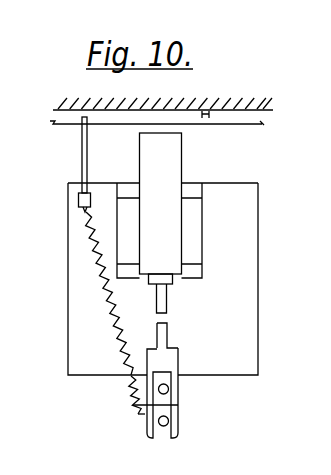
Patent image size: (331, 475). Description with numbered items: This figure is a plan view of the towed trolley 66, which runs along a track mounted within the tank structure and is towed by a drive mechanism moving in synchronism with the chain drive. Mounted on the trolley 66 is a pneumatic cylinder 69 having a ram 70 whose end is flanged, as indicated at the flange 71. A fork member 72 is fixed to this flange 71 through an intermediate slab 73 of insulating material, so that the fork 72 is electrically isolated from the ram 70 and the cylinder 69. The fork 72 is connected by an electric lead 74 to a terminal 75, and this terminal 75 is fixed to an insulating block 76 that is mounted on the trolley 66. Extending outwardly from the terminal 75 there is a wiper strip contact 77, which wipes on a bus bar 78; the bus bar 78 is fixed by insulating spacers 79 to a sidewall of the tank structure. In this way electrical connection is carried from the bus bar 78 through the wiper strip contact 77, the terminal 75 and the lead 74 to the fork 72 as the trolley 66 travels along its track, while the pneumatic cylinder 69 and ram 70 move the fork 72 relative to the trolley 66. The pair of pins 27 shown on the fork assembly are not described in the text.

The pins 27 is at (168, 420).
The towed trolley 66 is at (258, 261).
The pneumatic cylinder 69 is at (170, 169).
The ram 70 is at (167, 302).
The flange 71 is at (167, 340).
The fork member 72 is at (131, 406).
The intermediate slab of insulating material 73 is at (178, 357).
The electric lead 74 is at (110, 313).
The terminal 75 is at (85, 210).
The insulating block 76 is at (78, 197).
The wiper strip contact 77 is at (82, 150).
The bus bar 78 is at (262, 123).
The insulating spacers 79 is at (208, 116).